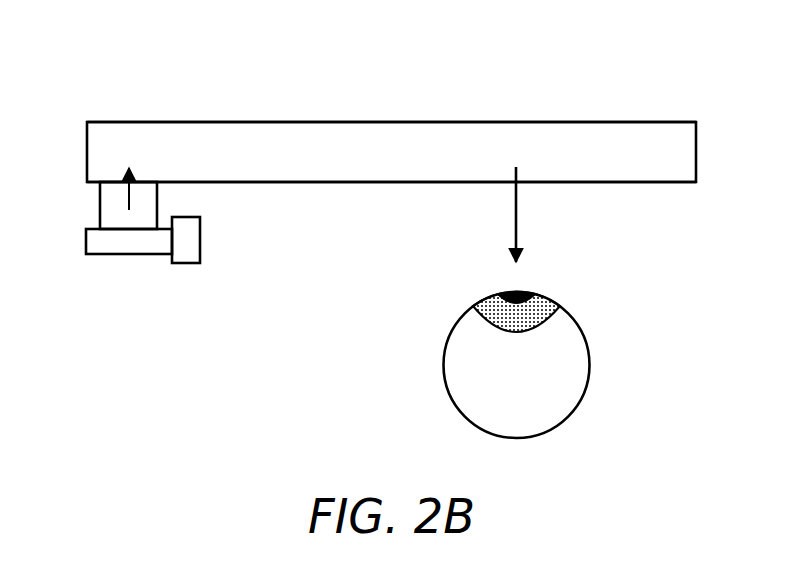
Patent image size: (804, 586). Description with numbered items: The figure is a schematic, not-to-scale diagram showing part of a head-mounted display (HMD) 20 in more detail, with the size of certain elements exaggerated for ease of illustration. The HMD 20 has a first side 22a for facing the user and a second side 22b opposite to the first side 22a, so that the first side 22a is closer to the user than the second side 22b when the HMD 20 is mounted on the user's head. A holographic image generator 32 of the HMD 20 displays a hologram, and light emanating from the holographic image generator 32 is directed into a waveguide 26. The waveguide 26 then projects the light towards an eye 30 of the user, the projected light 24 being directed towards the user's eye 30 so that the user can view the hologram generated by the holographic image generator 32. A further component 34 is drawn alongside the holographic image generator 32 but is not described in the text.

The head-mounted display 20 is at (165, 52).
The first side 22a is at (292, 209).
The second side 22b is at (476, 80).
The projected light 24 is at (517, 226).
The waveguide 26 is at (403, 163).
The eye 30 is at (590, 365).
The holographic image generator 32 is at (85, 242).
The detector / sensor 34 is at (184, 264).